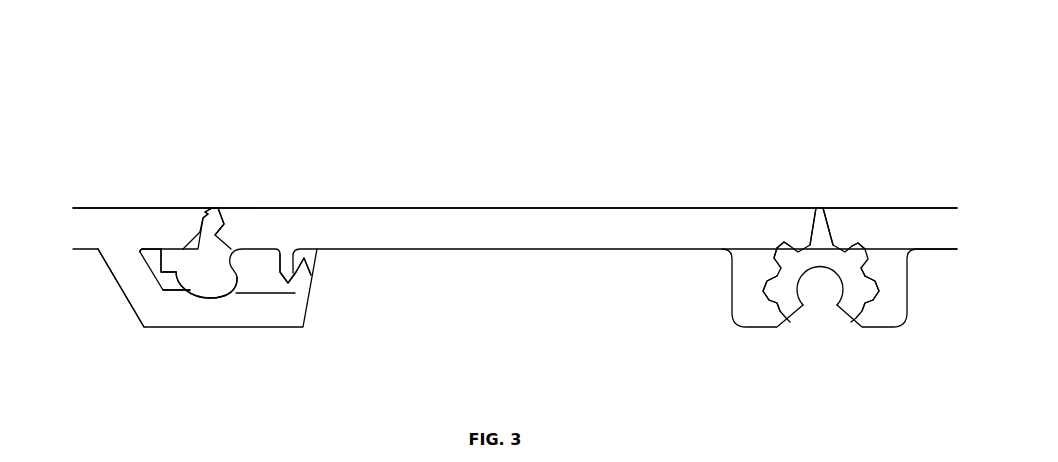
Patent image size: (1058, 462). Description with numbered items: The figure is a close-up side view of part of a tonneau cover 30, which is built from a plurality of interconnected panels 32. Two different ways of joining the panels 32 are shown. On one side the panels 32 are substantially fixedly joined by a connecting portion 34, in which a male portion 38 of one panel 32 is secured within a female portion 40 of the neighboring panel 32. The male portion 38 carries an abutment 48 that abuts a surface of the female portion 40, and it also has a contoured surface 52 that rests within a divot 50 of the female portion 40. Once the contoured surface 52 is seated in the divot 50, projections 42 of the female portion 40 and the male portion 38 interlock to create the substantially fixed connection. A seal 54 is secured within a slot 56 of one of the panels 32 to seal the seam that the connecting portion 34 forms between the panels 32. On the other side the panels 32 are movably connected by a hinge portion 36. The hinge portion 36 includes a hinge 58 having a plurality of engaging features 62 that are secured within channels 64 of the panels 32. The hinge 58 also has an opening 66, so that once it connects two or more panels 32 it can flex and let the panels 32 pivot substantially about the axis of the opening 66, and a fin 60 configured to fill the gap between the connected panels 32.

The tonneau cover 30 is at (249, 101).
The panels 32 is at (103, 228).
The connecting portion 34 is at (252, 338).
The hinge portion 36 is at (819, 381).
The male portion 38 is at (212, 267).
The female portion 40 is at (148, 312).
The projections 42 is at (287, 275).
The abutment 48 is at (167, 265).
The divot 50 is at (237, 300).
The contoured surface 52 is at (207, 298).
The seal 54 is at (218, 224).
The slot 56 is at (205, 228).
The hinge 58 is at (795, 300).
The fin 60 is at (817, 222).
The engaging features 62 is at (780, 248).
The channels 64 is at (782, 243).
The opening 66 is at (827, 294).